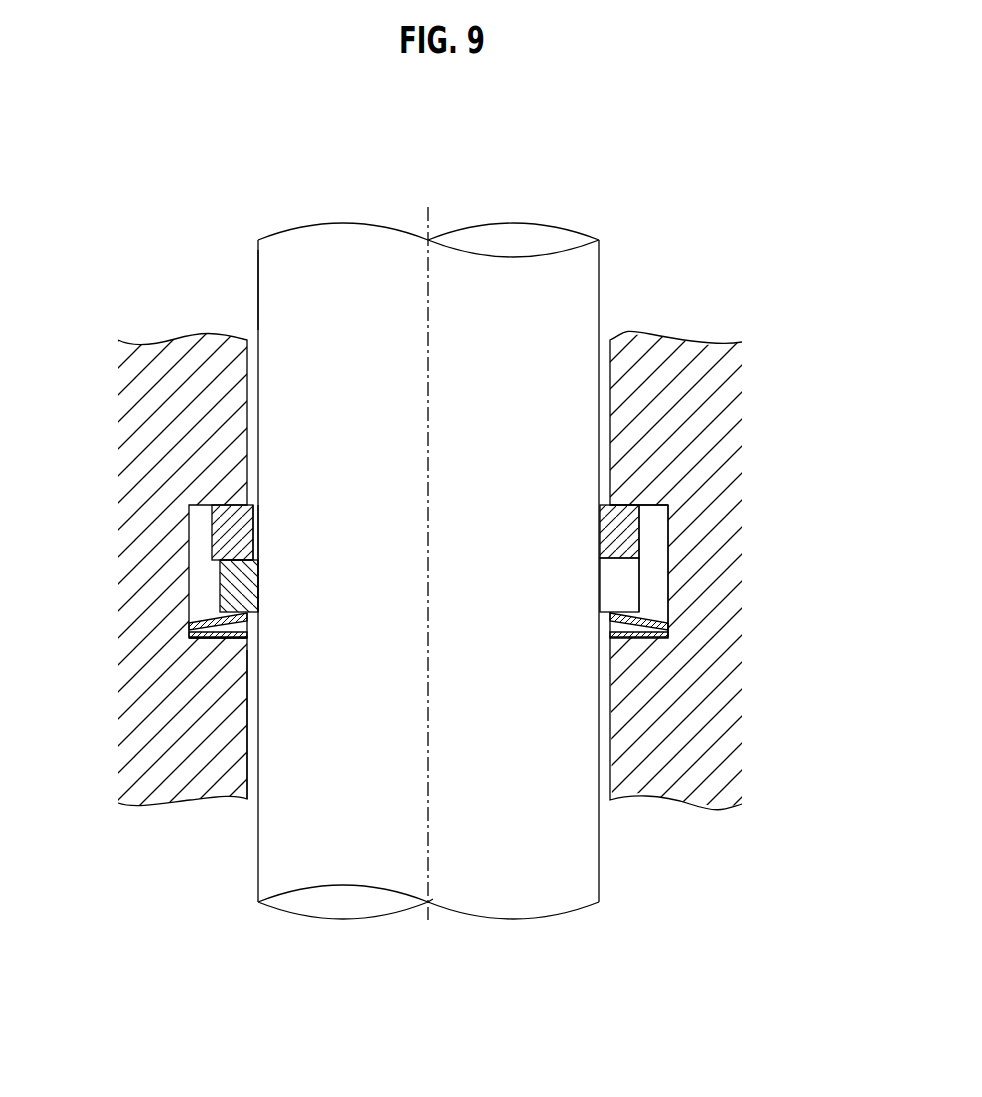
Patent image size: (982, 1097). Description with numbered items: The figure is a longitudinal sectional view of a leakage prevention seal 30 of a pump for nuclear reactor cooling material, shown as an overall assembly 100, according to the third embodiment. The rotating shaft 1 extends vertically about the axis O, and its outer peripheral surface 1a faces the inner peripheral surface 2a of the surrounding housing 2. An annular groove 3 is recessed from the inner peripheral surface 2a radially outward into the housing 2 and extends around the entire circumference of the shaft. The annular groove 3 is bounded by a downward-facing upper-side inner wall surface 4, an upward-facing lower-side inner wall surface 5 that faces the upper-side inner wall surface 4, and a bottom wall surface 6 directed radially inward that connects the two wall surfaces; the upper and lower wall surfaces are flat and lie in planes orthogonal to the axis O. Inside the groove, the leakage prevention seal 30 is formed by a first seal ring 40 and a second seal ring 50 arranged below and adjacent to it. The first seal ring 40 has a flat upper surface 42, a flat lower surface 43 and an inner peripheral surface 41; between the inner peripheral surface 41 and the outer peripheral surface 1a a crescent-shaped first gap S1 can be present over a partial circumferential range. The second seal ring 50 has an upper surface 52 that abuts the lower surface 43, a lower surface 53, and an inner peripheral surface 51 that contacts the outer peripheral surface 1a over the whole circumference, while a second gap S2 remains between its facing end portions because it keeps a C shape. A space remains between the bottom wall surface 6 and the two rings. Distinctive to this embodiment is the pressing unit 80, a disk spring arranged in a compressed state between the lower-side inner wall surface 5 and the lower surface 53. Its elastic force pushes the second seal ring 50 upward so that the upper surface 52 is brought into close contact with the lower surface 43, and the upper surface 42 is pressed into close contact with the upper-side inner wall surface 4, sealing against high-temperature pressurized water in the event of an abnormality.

The rotating shaft 1 is at (270, 257).
The outer peripheral surface of the rotating shaft 1a is at (257, 297).
The housing 2 is at (133, 385).
The inner peripheral surface of the housing 2a is at (247, 793).
The leakage prevention seal 30 is at (616, 320).
The sealing structure 100 is at (679, 172).
The axis O is at (430, 213).
The upper surface of the first seal ring 42 is at (233, 503).
The inner peripheral surface of the first seal ring 41 is at (253, 515).
The first gap S1 is at (257, 531).
The upper surface of the second seal ring 52 is at (233, 558).
The lower surface of the first seal ring 43 is at (256, 572).
The inner peripheral surface of the second seal ring 51 is at (259, 596).
The lower surface of the second seal ring 53 is at (246, 616).
The pressing unit 80 is at (230, 648).
The first seal ring 40 is at (588, 531).
The second gap S2 is at (611, 582).
The second seal ring 50 is at (586, 593).
The annular groove 3 is at (592, 626).
The upper-side inner wall surface 4 is at (648, 512).
The bottom wall surface 6 is at (658, 556).
The lower-side inner wall surface 5 is at (658, 628).